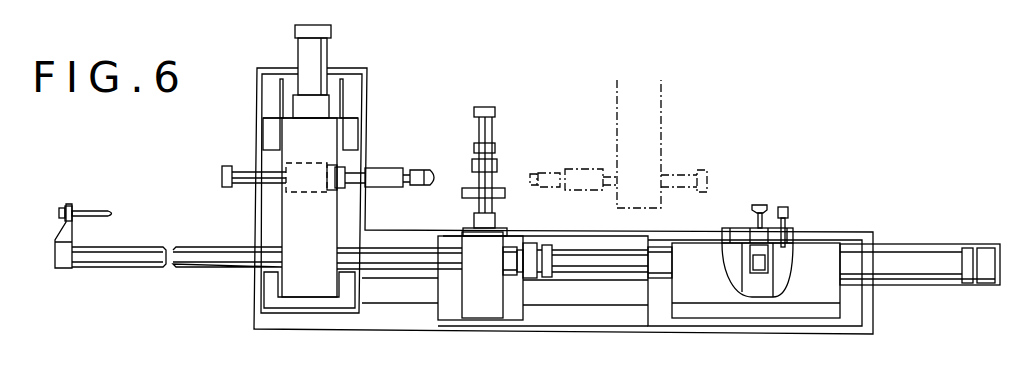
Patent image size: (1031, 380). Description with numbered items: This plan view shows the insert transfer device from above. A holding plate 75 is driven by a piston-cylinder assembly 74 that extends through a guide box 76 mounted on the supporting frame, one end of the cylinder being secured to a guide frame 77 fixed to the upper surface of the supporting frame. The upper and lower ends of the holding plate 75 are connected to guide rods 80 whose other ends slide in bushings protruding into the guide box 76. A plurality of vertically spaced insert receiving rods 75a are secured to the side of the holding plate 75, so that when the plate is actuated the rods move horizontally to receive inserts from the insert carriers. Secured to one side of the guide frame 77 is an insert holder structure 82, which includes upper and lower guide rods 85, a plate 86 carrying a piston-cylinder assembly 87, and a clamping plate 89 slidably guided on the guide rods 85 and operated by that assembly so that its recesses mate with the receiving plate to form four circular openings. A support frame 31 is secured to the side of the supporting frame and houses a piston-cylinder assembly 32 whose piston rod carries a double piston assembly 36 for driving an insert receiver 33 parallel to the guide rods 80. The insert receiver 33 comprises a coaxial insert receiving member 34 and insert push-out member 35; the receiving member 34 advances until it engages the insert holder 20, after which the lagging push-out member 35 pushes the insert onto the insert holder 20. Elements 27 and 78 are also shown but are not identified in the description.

The insert holder 20 is at (640, 144).
The spindle 27 is at (652, 102).
The support frame 31 is at (282, 219).
The piston-cylinder assembly 32 is at (323, 47).
The insert receiver 33 is at (386, 167).
The insert receiving member 34 is at (419, 170).
The insert push-out member 35 is at (385, 185).
The double piston assembly 36 is at (242, 172).
The piston-cylinder assembly 74 is at (914, 258).
The holding plate 75 is at (65, 265).
The insert receiving rods 75a is at (97, 210).
The guide box 76 is at (806, 294).
The guide frame 77 is at (481, 311).
The cylinder 78 is at (920, 263).
The guide rods 80 is at (596, 256).
The insert holder structure 82 is at (512, 160).
The guide rods 85 is at (492, 207).
The plate 86 is at (497, 165).
The piston-cylinder assembly 87 is at (495, 118).
The clamping plate 89 is at (505, 193).